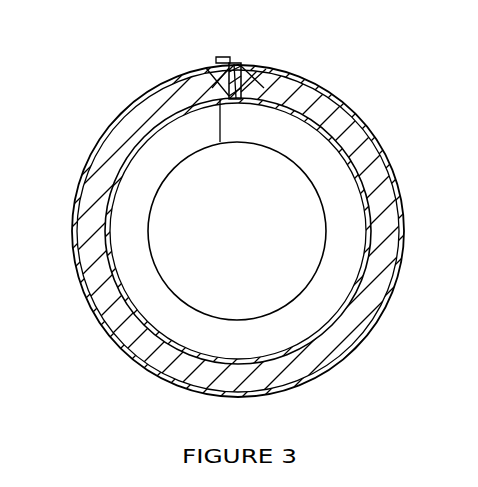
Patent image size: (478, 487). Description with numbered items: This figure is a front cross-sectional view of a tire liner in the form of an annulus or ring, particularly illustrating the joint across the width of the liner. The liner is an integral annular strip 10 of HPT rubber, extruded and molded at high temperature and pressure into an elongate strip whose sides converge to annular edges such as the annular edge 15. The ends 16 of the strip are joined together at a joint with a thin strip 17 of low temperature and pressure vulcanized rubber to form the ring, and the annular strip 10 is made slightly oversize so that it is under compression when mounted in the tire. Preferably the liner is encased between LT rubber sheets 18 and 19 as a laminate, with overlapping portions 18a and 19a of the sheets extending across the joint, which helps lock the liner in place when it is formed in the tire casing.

The annular strip 10 is at (381, 229).
The annular edge 15 is at (154, 200).
The ends 16 is at (296, 73).
The thin strip of rubber 17 is at (247, 61).
The LT rubber sheet 18 is at (354, 102).
The overlapping portion 18a is at (219, 58).
The LT rubber sheet 19 is at (383, 166).
The overlapping portion 19a is at (240, 143).